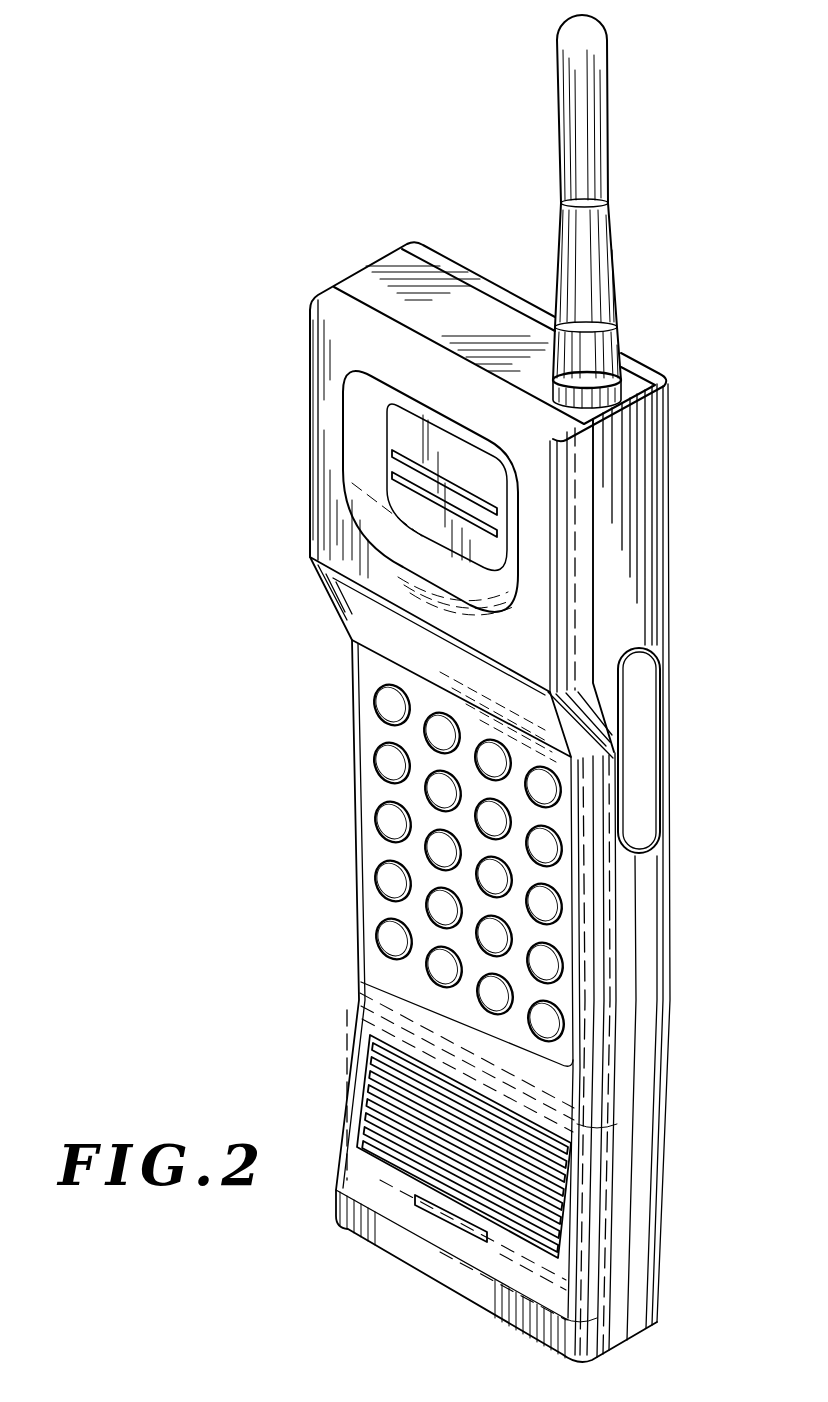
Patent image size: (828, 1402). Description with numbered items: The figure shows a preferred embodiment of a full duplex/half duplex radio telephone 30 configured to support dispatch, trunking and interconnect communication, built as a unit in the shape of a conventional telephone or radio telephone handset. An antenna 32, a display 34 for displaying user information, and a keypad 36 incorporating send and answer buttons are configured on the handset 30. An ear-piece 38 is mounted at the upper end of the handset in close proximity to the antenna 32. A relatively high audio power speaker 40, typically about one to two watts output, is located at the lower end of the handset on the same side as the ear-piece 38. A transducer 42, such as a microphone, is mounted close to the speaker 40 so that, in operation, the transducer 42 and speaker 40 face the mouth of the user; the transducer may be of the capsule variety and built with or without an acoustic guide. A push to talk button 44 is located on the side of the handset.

The radio telephone 30 is at (208, 1231).
The antenna 32 is at (586, 150).
The display 34 is at (368, 626).
The keypad 36 is at (376, 775).
The ear-piece 38 is at (387, 437).
The speaker 40 is at (360, 1093).
The transducer 42 is at (445, 1215).
The push to talk button 44 is at (640, 723).